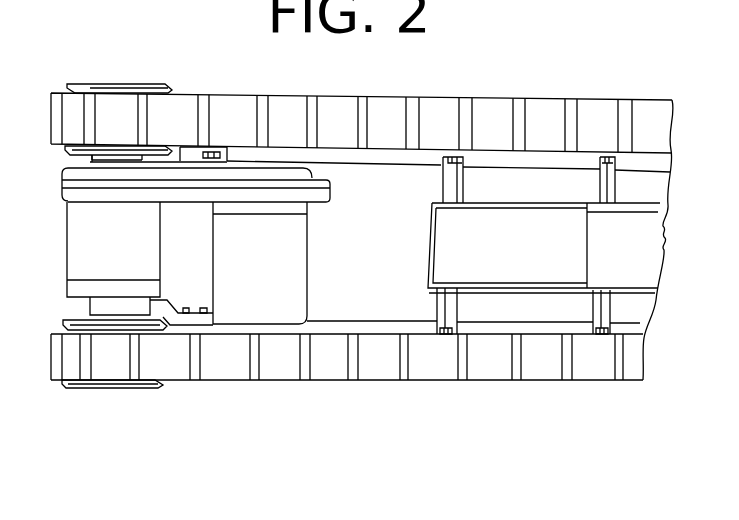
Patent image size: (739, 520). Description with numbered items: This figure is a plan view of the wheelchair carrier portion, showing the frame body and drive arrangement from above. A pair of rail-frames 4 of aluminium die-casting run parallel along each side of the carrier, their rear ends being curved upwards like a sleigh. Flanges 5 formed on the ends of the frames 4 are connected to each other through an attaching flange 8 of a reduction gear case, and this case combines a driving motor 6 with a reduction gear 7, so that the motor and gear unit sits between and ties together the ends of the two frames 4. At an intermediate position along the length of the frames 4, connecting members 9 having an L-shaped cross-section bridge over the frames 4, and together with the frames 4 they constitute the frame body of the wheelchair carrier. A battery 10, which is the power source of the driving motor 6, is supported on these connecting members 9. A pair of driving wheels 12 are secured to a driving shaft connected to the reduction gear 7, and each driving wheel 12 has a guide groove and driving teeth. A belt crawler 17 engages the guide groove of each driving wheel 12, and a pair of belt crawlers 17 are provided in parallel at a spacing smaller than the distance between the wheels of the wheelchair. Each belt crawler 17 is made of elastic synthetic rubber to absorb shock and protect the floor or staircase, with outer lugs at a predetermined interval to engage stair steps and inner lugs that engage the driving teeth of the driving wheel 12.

The rail-frame 4 is at (362, 165).
The flange 5 is at (181, 158).
The driving motor 6 is at (294, 281).
The reduction gear 7 is at (77, 257).
The attaching flange 8 is at (93, 160).
The connecting member 9 is at (441, 188).
The battery 10 is at (478, 243).
The driving wheel 12 is at (84, 82).
The belt crawler 17 is at (343, 118).